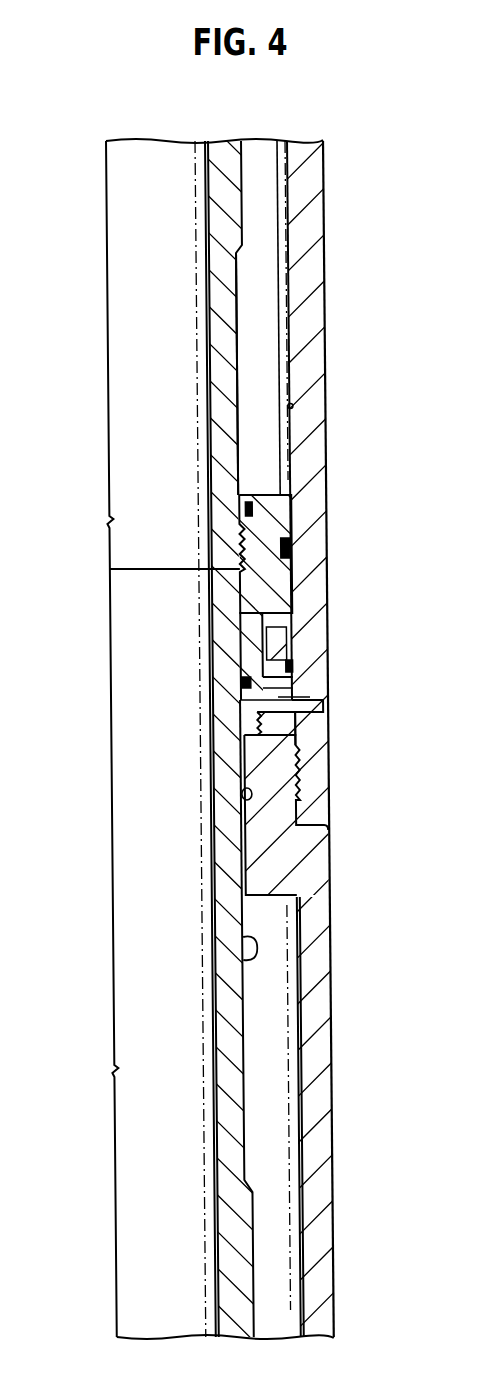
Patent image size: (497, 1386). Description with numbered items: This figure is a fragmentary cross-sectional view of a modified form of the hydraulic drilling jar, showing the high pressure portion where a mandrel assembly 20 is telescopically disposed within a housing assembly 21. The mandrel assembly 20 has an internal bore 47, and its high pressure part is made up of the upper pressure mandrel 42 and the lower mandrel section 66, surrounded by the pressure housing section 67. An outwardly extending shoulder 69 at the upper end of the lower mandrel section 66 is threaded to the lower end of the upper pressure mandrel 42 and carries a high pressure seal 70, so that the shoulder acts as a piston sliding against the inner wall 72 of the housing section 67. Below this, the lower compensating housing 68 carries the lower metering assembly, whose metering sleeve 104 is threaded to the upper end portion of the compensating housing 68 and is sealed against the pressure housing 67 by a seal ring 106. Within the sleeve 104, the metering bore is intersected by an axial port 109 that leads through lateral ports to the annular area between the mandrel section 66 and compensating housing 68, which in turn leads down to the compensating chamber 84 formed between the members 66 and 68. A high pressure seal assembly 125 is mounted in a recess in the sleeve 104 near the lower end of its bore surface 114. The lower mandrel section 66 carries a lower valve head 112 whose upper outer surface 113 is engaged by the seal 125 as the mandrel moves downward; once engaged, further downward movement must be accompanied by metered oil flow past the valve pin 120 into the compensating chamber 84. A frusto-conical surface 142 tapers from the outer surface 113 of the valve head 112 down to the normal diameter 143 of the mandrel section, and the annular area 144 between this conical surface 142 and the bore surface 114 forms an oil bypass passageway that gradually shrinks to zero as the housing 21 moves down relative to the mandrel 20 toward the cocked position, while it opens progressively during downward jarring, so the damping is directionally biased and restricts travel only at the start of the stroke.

The mandrel assembly 20 is at (203, 223).
The housing assembly 21 is at (248, 693).
The upper pressure mandrel 42 is at (228, 297).
The internal bore 47 is at (148, 332).
The pressure housing section 67 is at (307, 351).
The inner wall 72 is at (291, 406).
The outwardly extending shoulder 69 is at (275, 520).
The high pressure seal 70 is at (287, 549).
The metering sleeve 104 is at (288, 636).
The seal ring 106 is at (288, 665).
The valve pin 120 is at (286, 688).
The axial port 109 is at (318, 703).
The normal diameter 143 is at (233, 643).
The bore surface 114 is at (238, 684).
The high pressure seal assembly 125 is at (237, 705).
The annular area 144 is at (234, 758).
The frusto-conical surface 142 is at (237, 796).
The lower valve head 112 is at (246, 862).
The compensating housing 68 is at (322, 936).
The outer surface 113 is at (238, 950).
The lower mandrel section 66 is at (218, 1036).
The compensating chamber 84 is at (273, 1107).